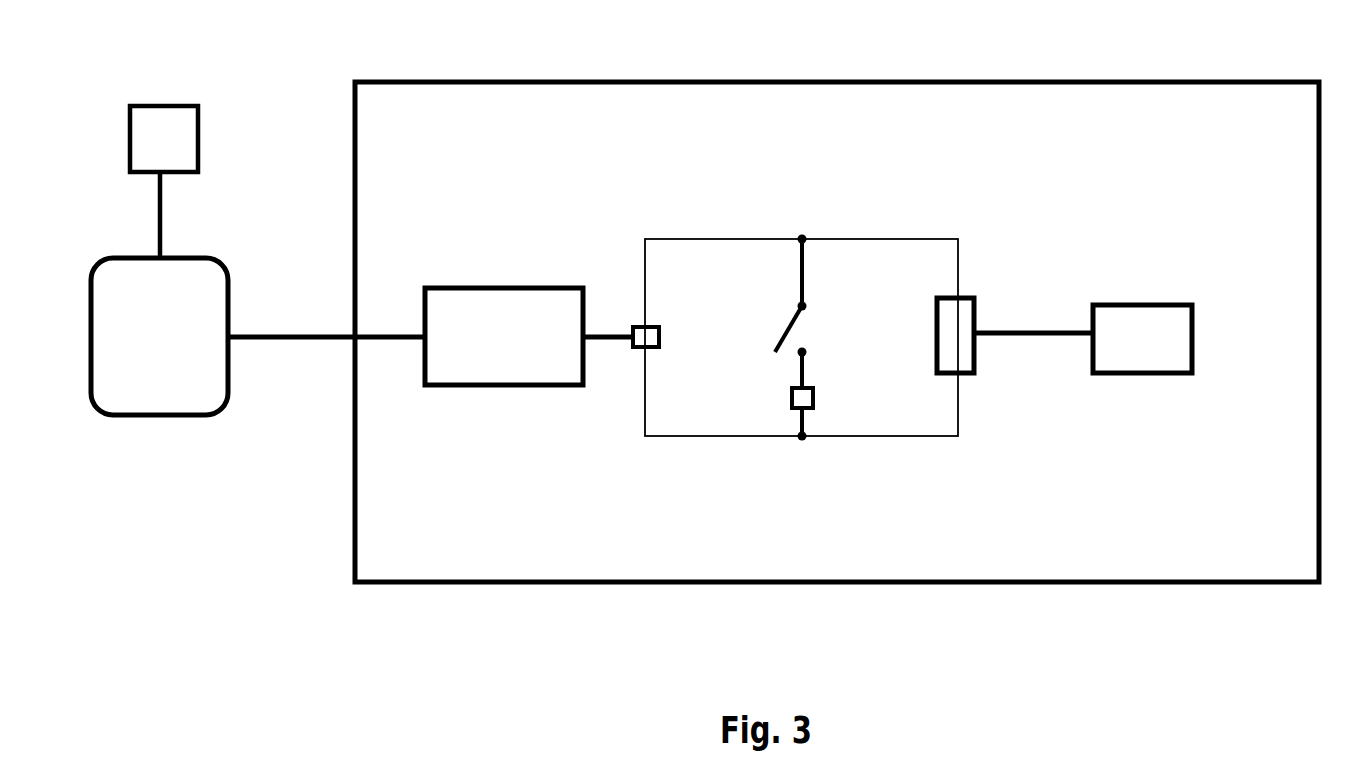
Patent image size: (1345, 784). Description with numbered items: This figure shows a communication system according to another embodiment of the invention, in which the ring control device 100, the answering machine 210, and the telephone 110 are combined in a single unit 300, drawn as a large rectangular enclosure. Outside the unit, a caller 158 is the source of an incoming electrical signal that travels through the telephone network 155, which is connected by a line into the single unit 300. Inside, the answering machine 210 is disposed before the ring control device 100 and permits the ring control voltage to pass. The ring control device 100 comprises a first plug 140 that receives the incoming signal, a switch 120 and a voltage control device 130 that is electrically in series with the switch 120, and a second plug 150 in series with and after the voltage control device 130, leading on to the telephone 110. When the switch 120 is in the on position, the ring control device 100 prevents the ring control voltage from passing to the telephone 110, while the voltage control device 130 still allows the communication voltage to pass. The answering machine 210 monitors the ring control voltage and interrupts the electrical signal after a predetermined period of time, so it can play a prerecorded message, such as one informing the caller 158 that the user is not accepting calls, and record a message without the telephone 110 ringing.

The single unit 300 is at (849, 92).
The caller 158 is at (145, 153).
The telephone network 155 is at (102, 283).
The answering machine 210 is at (468, 293).
The first plug 140 is at (645, 336).
The ring control device 100 is at (772, 238).
The switch 120 is at (787, 332).
The voltage control device 130 is at (790, 395).
The second plug 150 is at (968, 312).
The telephone 110 is at (1130, 303).